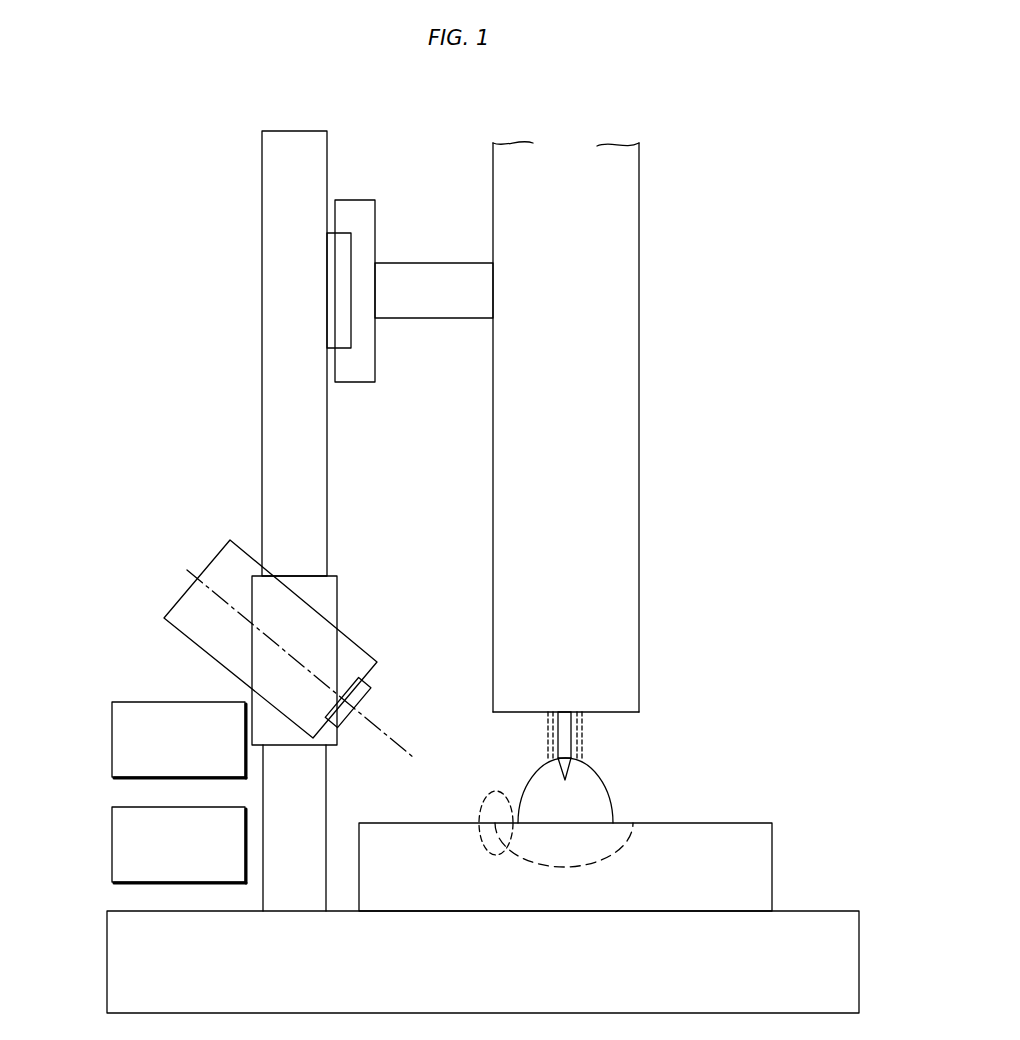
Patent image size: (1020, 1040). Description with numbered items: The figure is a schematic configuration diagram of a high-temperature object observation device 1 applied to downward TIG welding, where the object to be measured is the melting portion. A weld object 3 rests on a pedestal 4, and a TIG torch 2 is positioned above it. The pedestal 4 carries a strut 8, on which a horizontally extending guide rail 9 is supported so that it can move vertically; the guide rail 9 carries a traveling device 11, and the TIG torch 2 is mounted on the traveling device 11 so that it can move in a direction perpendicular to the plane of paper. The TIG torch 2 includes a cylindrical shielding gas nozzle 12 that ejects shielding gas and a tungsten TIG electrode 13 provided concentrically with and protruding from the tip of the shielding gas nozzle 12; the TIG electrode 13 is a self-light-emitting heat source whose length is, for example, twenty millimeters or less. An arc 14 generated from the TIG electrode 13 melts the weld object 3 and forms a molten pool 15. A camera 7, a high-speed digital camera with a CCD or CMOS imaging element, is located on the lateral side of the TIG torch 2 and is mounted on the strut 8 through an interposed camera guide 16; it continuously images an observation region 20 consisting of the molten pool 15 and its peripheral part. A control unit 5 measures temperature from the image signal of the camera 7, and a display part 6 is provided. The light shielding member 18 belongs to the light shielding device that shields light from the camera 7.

The welding apparatus 1 is at (197, 164).
The TIG torch 2 is at (492, 488).
The weld object 3 is at (742, 823).
The pedestal 4 is at (833, 911).
The control unit 5 is at (112, 858).
The display part 6 is at (112, 722).
The camera 7 is at (222, 543).
The strut 8 is at (262, 378).
The guide rail 9 is at (351, 252).
The traveling device 11 is at (358, 200).
The shielding gas nozzle 12 is at (640, 538).
The TIG electrode 13 is at (590, 745).
The arc 14 is at (600, 780).
The molten pool 15 is at (623, 823).
The camera guide 16 is at (338, 603).
The light shielding member 18 is at (548, 740).
The observation region 20 is at (475, 805).